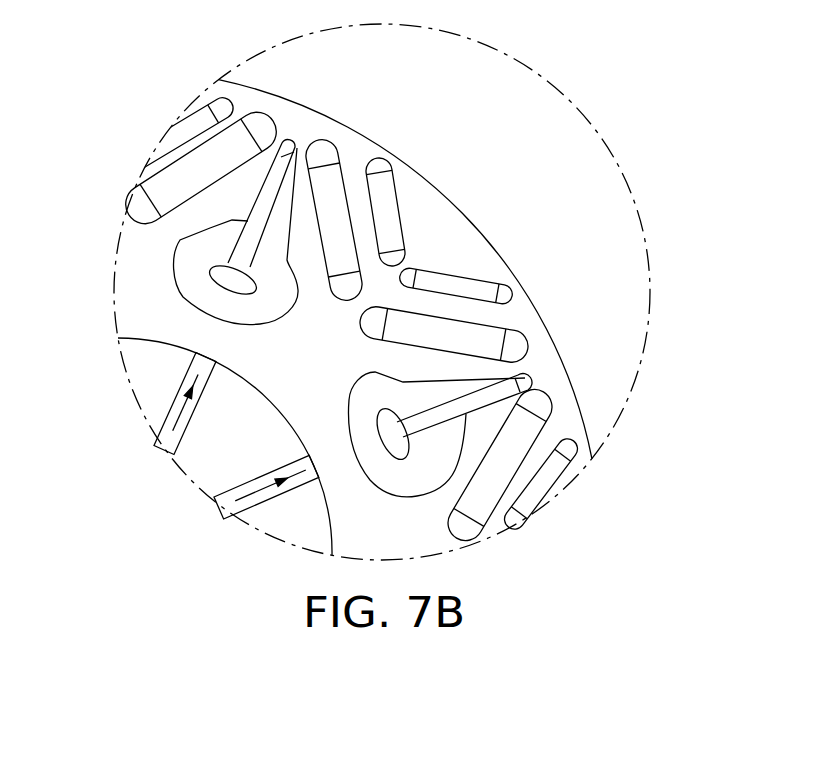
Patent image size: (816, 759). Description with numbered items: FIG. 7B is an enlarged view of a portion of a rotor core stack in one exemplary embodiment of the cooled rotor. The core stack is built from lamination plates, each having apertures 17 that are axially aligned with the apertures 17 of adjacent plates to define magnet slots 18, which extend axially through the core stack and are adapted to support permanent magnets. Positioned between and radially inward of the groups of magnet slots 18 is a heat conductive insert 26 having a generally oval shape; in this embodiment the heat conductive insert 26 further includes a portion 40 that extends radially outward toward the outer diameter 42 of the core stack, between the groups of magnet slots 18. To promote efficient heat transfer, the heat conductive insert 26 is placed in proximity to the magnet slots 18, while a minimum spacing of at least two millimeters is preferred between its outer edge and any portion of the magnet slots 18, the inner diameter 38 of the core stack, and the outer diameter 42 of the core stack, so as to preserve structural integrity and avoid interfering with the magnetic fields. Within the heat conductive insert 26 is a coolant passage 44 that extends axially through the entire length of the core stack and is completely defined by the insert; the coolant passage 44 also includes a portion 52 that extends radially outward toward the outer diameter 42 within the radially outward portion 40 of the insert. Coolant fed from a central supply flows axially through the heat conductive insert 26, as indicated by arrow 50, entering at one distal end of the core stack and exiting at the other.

The apertures 17 is at (379, 302).
The magnet slots 18 is at (132, 193).
The heat conductive insert 26 is at (200, 281).
The inner diameter 38 is at (267, 400).
The portion 40 is at (257, 187).
The outer diameter 42 is at (463, 213).
The coolant passage 44 is at (213, 287).
The arrow 50 is at (180, 410).
The portion 52 is at (250, 237).